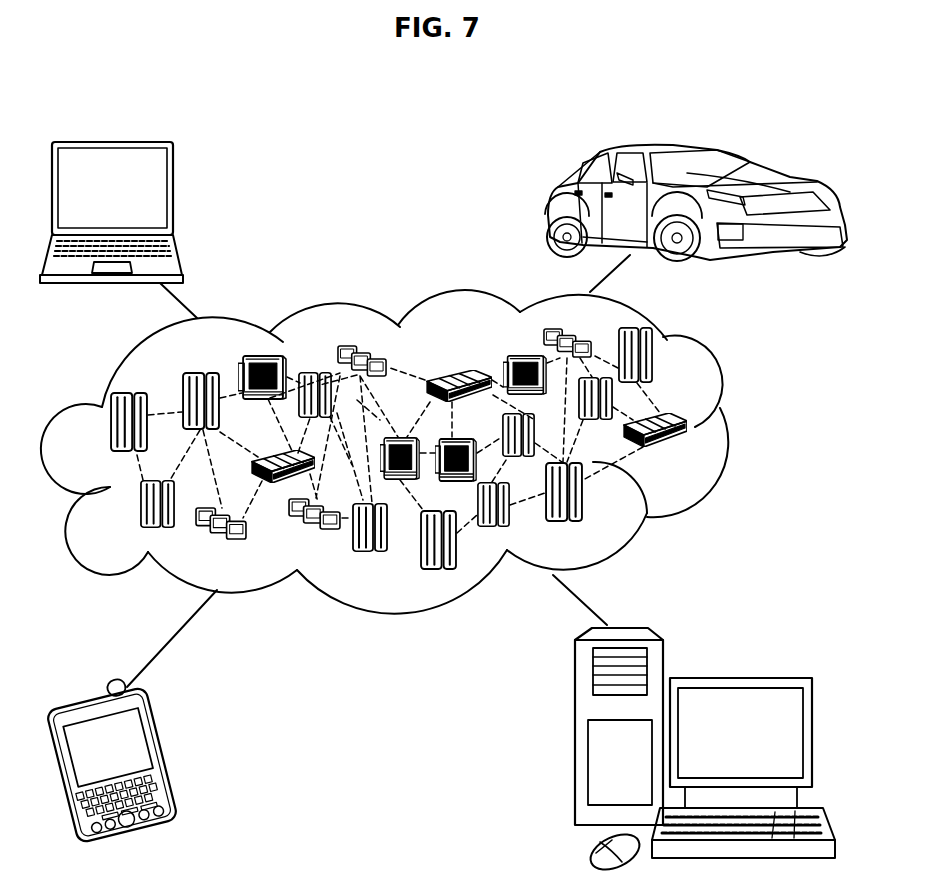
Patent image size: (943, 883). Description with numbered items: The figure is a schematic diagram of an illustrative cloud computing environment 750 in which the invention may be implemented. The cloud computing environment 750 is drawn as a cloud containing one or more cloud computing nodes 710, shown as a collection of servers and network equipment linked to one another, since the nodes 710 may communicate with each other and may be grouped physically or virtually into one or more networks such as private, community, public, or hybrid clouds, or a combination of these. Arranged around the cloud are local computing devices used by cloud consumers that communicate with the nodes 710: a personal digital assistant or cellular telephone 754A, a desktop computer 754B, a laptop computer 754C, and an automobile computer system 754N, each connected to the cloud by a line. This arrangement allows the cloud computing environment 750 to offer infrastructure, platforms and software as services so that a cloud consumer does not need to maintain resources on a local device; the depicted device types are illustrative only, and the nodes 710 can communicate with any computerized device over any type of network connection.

The laptop computer 754C is at (173, 192).
The automobile computer system 754N is at (548, 210).
The cloud computing environment 750 is at (738, 430).
The cloud computing nodes 710 is at (696, 458).
The personal digital assistant or cellular telephone 754A is at (163, 760).
The desktop computer 754B is at (740, 678).